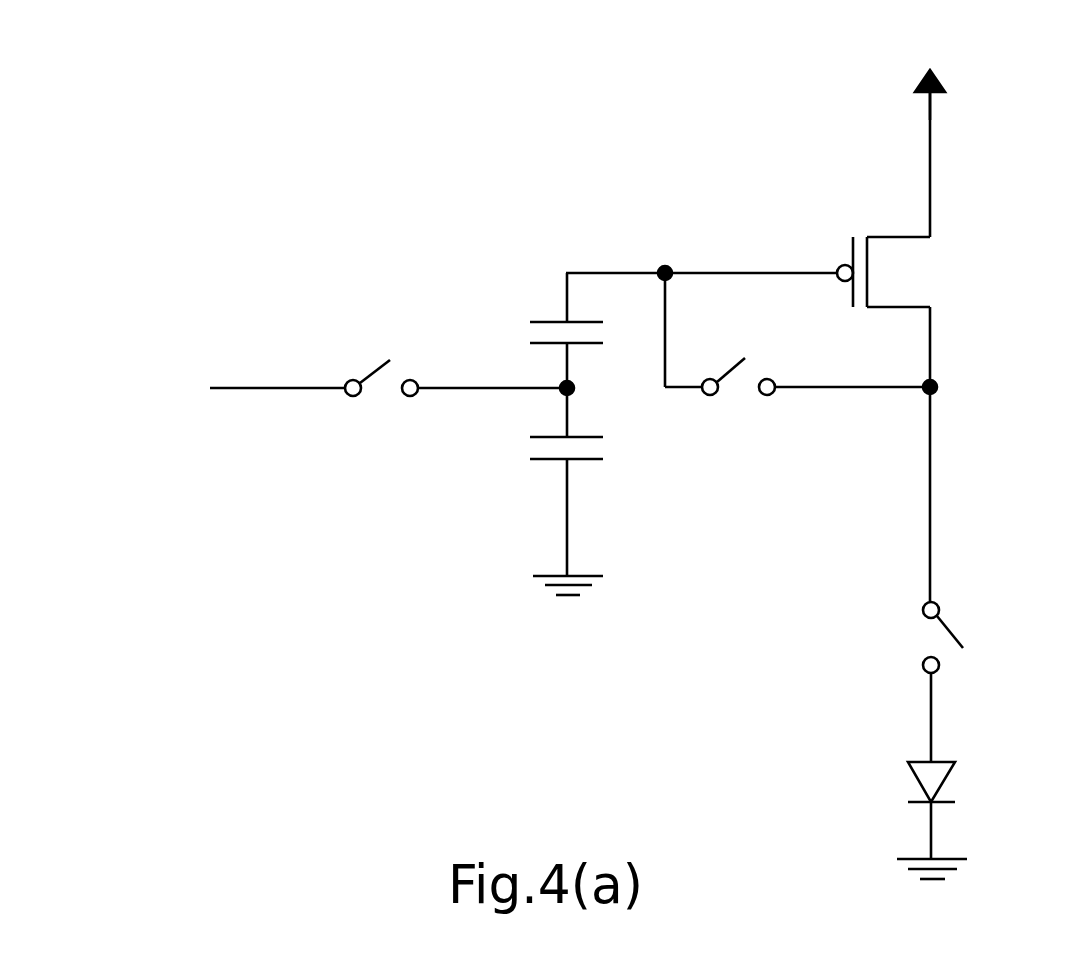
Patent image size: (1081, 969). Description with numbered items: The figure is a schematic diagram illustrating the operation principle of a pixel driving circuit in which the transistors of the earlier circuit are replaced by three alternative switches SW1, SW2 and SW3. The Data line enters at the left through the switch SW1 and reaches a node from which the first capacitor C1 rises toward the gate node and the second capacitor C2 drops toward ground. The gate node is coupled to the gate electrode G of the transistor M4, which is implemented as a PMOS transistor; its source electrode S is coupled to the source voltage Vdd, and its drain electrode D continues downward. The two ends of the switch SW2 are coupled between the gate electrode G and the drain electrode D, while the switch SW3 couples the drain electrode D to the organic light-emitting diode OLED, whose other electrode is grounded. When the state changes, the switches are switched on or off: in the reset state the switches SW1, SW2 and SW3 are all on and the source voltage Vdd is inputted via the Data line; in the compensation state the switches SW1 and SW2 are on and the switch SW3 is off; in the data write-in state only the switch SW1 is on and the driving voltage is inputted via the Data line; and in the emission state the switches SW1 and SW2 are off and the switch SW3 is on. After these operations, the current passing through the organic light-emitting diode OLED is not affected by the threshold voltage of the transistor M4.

The data line Data line is at (189, 392).
The first switch SW1 is at (456, 355).
The second switch SW2 is at (797, 358).
The third switch SW3 is at (902, 682).
The first capacitor C1 is at (539, 335).
The second capacitor C2 is at (539, 450).
The transistor M4 is at (828, 238).
The gate electrode G is at (759, 255).
The source electrode S is at (945, 163).
The drain electrode D is at (946, 347).
The source voltage Vdd is at (926, 74).
The organic light-emitting diode OLED is at (985, 809).